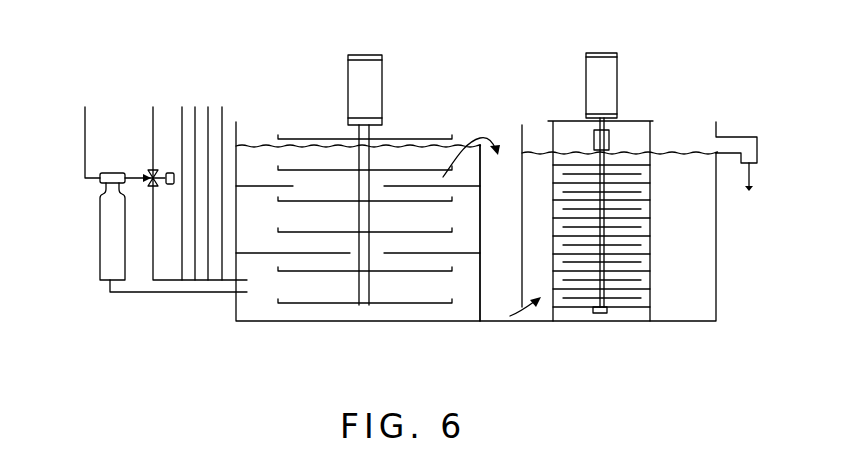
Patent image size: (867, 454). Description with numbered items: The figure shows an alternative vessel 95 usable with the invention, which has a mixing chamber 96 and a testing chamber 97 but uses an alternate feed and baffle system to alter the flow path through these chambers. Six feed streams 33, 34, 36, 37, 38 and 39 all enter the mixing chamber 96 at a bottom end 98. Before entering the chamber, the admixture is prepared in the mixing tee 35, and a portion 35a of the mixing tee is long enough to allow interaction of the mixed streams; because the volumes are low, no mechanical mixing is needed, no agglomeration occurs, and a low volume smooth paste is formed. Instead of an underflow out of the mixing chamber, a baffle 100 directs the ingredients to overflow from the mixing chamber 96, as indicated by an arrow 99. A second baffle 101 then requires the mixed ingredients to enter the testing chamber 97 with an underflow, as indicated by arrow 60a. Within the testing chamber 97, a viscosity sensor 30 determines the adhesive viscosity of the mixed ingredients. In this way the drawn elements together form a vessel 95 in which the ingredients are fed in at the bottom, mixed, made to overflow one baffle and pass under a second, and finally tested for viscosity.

The viscosity sensor 30 is at (610, 80).
The feed stream 33 is at (152, 112).
The feed stream 34 is at (83, 117).
The mixing tee 35 is at (118, 172).
The portion of the mixing tee 35a is at (100, 257).
The feed stream 36 is at (182, 112).
The feed stream 37 is at (196, 112).
The feed stream 38 is at (207, 112).
The feed stream 39 is at (222, 113).
The alternative vessel 95 is at (215, 318).
The mixing chamber 96 is at (358, 188).
The testing chamber 97 is at (618, 221).
The bottom end 98 is at (250, 288).
The arrow 99 is at (478, 140).
The baffle 100 is at (481, 242).
The second baffle 101 is at (521, 126).
The arrow 60a is at (532, 316).